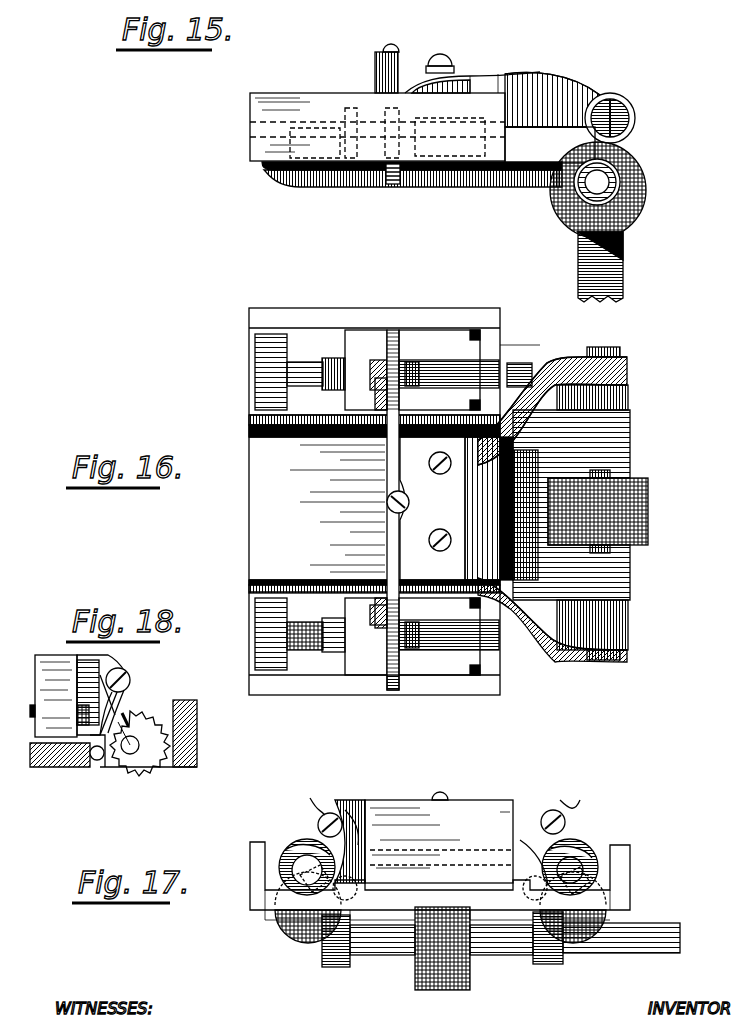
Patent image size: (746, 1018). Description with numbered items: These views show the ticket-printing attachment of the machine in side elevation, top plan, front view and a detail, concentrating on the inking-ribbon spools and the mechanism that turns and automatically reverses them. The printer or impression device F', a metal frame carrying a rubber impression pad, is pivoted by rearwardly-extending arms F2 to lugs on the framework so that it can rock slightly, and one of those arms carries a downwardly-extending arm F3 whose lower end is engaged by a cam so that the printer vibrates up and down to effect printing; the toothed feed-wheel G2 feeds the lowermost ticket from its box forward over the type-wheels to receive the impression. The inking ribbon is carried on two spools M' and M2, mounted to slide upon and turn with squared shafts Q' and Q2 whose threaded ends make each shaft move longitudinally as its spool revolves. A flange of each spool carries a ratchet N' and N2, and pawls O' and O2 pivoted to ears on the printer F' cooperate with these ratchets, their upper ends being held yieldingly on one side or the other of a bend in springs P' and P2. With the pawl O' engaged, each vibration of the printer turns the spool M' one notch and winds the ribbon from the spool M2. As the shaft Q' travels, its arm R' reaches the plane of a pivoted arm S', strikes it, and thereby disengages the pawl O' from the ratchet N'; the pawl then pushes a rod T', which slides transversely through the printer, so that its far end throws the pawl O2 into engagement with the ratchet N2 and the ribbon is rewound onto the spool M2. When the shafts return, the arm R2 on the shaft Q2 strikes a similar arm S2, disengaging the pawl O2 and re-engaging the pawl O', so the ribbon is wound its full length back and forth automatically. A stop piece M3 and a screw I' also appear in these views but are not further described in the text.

In FIG. 15, the shaft Q' is at (359, 127).
In FIG. 16, the shaft Q' is at (327, 545).
In FIG. 15, the ratchet N' is at (412, 188).
In FIG. 16, the ratchet N' is at (402, 703).
In FIG. 18, the ratchet N' is at (158, 726).
In FIG. 17, the ratchet N' is at (605, 903).
In FIG. 15, the printer F' is at (457, 68).
In FIG. 16, the printer F' is at (443, 508).
In FIG. 18, the printer F' is at (70, 696).
In FIG. 17, the printer F' is at (424, 837).
In FIG. 15, the rearwardly-extending arms F2 is at (570, 105).
In FIG. 16, the rearwardly-extending arms F2 is at (552, 370).
In FIG. 15, the toothed feed-wheel G2 is at (648, 176).
In FIG. 16, the toothed feed-wheel G2 is at (650, 516).
In FIG. 17, the toothed feed-wheel G2 is at (445, 990).
In FIG. 15, the downwardly-extending arm F3 is at (628, 282).
In FIG. 16, the spring P2 is at (366, 370).
In FIG. 17, the spring P2 is at (330, 812).
In FIG. 16, the spring P' is at (366, 636).
In FIG. 16, the ratchet N2 is at (393, 330).
In FIG. 17, the ratchet N2 is at (292, 925).
In FIG. 16, the spool M2 is at (436, 362).
In FIG. 17, the spool M2 is at (290, 858).
In FIG. 16, the stop M3 is at (482, 328).
In FIG. 16, the spool M' is at (449, 636).
In FIG. 17, the spool M' is at (591, 860).
In FIG. 16, the arm R2 is at (372, 392).
In FIG. 17, the arm R2 is at (318, 886).
In FIG. 16, the arm R' is at (352, 588).
In FIG. 18, the arm R' is at (151, 712).
In FIG. 17, the arm R' is at (580, 859).
In FIG. 16, the shaft Q2 is at (520, 362).
In FIG. 18, the rod T' is at (48, 713).
In FIG. 17, the rod T' is at (441, 849).
In FIG. 18, the pawl O' is at (133, 701).
In FIG. 17, the pawl O' is at (564, 843).
In FIG. 18, the arm S' is at (67, 767).
In FIG. 17, the arm S' is at (521, 892).
In FIG. 17, the pawl O2 is at (307, 856).
In FIG. 17, the arm S2 is at (360, 890).
In FIG. 17, the screw I' is at (557, 804).